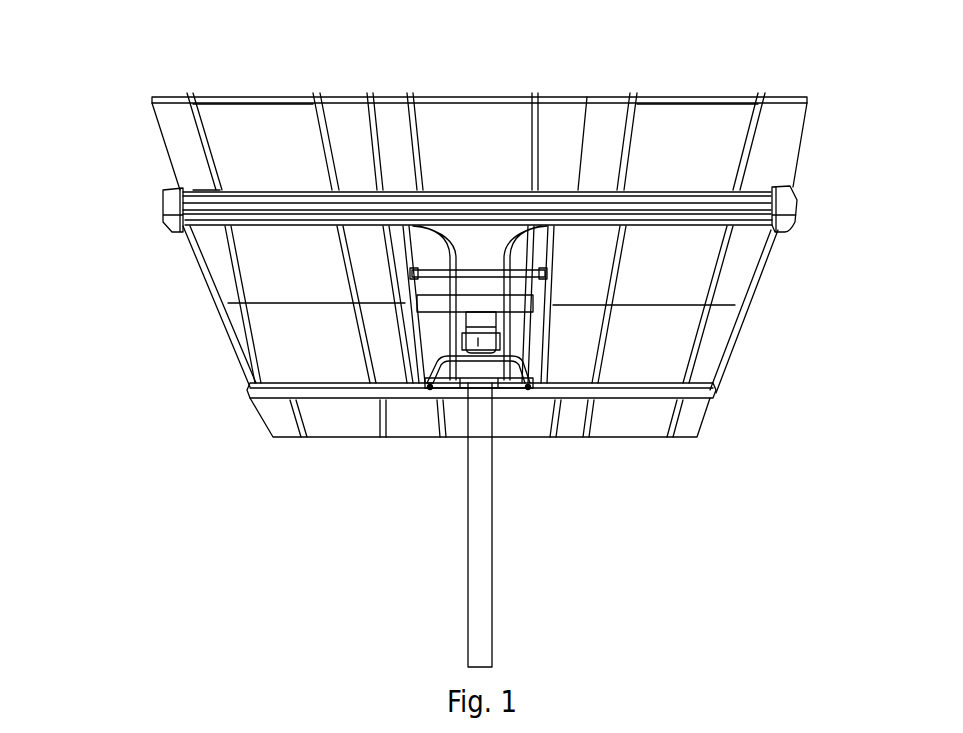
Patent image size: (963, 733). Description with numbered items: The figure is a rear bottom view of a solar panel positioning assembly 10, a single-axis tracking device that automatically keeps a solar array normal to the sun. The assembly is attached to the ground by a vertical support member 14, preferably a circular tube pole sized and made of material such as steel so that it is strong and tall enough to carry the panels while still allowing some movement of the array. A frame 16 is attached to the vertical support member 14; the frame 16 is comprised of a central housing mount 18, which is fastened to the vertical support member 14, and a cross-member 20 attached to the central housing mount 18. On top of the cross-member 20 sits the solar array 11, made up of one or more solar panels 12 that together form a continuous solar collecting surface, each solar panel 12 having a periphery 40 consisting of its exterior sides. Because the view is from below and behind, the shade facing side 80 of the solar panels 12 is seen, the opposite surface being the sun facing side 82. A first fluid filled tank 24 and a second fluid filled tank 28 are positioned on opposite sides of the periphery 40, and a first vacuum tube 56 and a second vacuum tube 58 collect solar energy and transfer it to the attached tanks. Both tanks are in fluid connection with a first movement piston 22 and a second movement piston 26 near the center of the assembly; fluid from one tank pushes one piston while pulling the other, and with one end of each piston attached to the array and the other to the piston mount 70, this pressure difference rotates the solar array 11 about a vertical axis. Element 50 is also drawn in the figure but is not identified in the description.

The solar panel positioning assembly 10 is at (82, 255).
The solar array 11 is at (470, 108).
The solar panel 12 is at (678, 118).
The vertical support member 14 is at (483, 515).
The frame 16 is at (632, 103).
The central housing mount 18 is at (468, 302).
The cross-member 20 is at (450, 303).
The first movement piston 22 is at (430, 387).
The first fluid filled tank 24 is at (172, 225).
The second movement piston 26 is at (527, 387).
The second fluid filled tank 28 is at (783, 198).
The periphery 40 is at (246, 97).
The support hoops 50 is at (510, 253).
The first vacuum tube 56 is at (225, 337).
The second vacuum tube 58 is at (758, 272).
The piston mount 70 is at (507, 390).
The shade facing side 80 is at (640, 350).
The sun facing side 82 is at (193, 85).